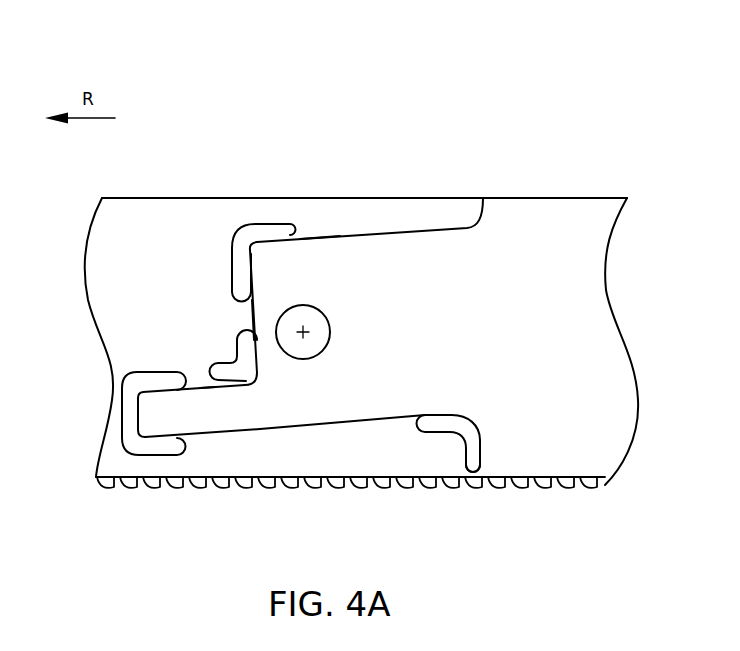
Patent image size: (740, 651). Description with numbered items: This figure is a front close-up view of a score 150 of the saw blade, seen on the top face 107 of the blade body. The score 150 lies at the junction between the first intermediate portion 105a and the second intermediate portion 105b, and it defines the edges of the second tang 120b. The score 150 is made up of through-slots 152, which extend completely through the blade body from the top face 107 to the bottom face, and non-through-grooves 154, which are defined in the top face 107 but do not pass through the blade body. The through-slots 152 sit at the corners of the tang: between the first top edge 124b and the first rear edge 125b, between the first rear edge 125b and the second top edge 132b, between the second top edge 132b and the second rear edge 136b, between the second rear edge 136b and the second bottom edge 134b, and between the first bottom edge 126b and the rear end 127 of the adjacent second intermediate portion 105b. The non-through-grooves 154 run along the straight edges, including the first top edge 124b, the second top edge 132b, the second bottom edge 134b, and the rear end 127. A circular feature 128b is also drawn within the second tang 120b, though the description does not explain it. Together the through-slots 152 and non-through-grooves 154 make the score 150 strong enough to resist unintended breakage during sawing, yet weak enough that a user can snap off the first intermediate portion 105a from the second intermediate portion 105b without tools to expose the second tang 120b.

The first intermediate portion 105a is at (198, 457).
The second intermediate portion 105b is at (533, 212).
The top face 107 is at (546, 308).
The second tang 120b is at (383, 275).
The first top edge 124b is at (443, 228).
The first rear edge 125b is at (252, 320).
The first bottom edge 126b is at (330, 432).
The rear end 127 is at (470, 467).
The pivot hole 128b is at (330, 333).
The second top edge 132b is at (207, 385).
The second bottom edge 134b is at (212, 435).
The second rear edge 136b is at (140, 407).
The score 150 is at (320, 237).
The through-slot 152 is at (252, 225).
The non-through-groove 154 is at (357, 230).